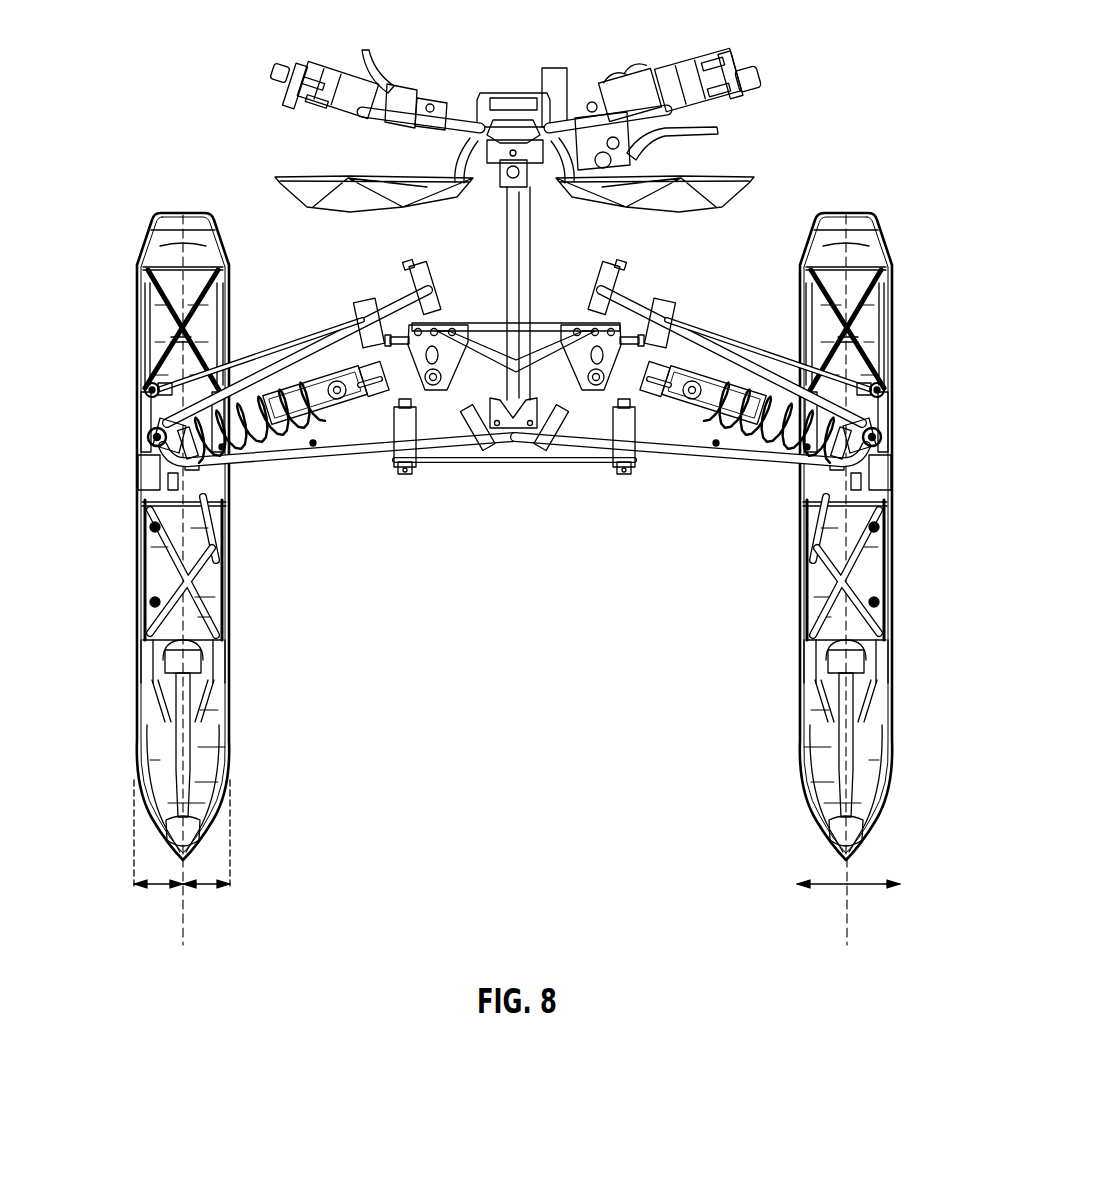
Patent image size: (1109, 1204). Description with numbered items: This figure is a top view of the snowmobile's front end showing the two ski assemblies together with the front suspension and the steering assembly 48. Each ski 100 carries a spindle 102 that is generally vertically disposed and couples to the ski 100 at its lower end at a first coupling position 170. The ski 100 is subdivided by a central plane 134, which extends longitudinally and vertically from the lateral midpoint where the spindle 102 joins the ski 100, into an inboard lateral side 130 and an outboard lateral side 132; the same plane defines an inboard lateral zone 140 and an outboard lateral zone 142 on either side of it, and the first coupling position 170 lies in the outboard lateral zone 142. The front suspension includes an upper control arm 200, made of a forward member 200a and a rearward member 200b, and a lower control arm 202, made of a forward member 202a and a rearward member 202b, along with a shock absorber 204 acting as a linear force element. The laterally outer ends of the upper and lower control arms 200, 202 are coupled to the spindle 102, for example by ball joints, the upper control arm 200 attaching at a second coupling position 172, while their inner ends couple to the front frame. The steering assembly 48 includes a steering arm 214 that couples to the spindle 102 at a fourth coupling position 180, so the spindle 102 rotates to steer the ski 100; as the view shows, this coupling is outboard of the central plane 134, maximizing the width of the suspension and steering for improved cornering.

The steering assembly 48 is at (434, 54).
The ski 100 is at (905, 690).
The spindle 102 is at (880, 478).
The inboard lateral side 130 is at (210, 889).
The outboard lateral side 132 is at (159, 889).
The central plane 134 is at (184, 922).
The inboard lateral zone 140 is at (824, 889).
The outboard lateral zone 142 is at (873, 889).
The first coupling position 170 is at (882, 542).
The second coupling position 172 is at (145, 436).
The fourth coupling position 180 is at (145, 389).
The upper control arm 200 is at (304, 338).
The forward member 200a is at (723, 458).
The rearward member 200b is at (727, 350).
The lower control arm 202 is at (387, 286).
The forward member 202a is at (566, 442).
The rearward member 202b is at (628, 298).
The shock absorber 204 is at (268, 430).
The steering arm 214 is at (277, 357).